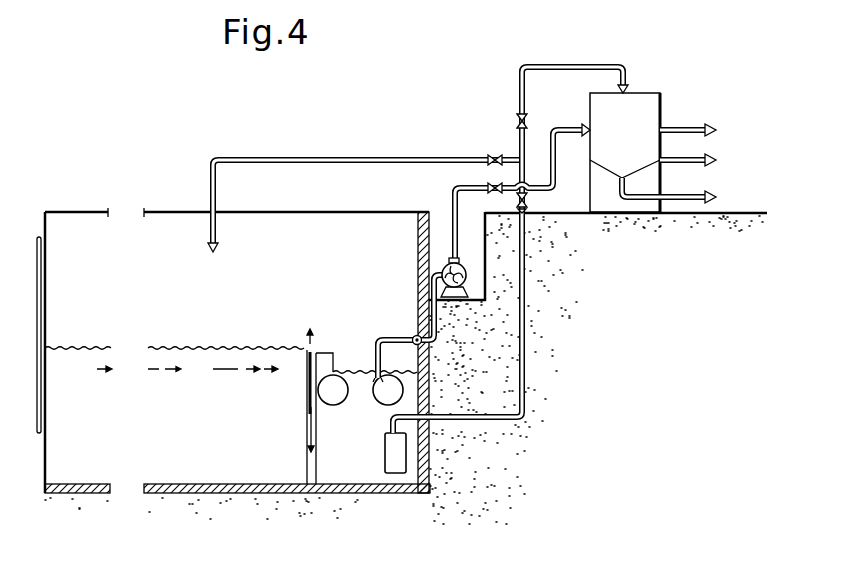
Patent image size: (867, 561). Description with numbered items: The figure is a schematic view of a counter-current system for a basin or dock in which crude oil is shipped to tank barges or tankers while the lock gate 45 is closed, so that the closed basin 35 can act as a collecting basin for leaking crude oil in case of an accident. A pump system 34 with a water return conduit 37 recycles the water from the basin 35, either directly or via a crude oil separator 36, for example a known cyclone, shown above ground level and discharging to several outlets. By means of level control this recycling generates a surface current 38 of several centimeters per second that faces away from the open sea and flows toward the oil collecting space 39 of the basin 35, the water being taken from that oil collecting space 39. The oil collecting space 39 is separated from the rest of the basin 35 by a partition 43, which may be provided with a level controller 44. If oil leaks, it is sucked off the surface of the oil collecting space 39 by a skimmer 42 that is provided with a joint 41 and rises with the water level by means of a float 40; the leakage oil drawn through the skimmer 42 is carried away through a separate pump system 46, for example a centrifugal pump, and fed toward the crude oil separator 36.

The pump system 34 is at (398, 452).
The basin 35 is at (221, 473).
The crude oil separator 36 is at (647, 106).
The water return conduit 37 is at (446, 157).
The surface current 38 is at (231, 365).
The oil collecting space 39 is at (362, 475).
The float 40 is at (343, 402).
The joint 41 is at (413, 337).
The skimmer 42 is at (372, 378).
The partition 43 is at (307, 452).
The level controller 44 is at (309, 402).
The lock gate 45 is at (39, 279).
The separate pump system 46 is at (478, 300).